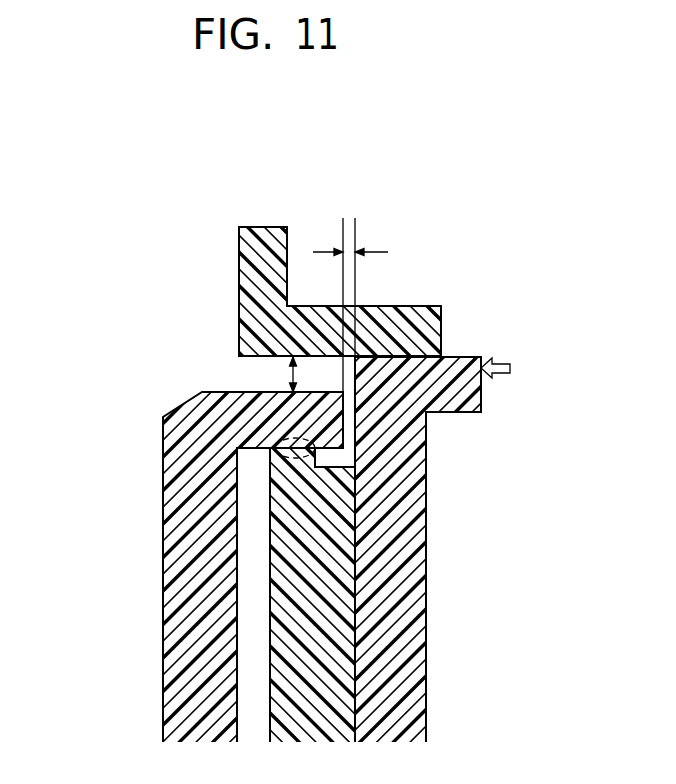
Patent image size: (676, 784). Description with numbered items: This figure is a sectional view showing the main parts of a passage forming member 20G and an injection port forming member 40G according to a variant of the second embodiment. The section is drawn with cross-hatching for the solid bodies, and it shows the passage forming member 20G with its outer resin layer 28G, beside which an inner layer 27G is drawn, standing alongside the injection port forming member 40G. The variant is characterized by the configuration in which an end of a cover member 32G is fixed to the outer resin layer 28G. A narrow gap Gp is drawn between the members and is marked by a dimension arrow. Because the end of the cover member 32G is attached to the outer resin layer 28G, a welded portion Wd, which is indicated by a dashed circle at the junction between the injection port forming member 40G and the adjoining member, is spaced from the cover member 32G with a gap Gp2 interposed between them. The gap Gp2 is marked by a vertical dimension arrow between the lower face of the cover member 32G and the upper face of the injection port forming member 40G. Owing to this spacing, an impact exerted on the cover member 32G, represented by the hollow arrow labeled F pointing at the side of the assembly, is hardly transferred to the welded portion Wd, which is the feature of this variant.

The cover member 32G is at (239, 253).
The injection port forming member 40G is at (163, 467).
The inner layer 27G is at (354, 638).
The outer resin layer 28G is at (426, 575).
The passage forming member 20G is at (338, 392).
The gap Gp is at (350, 293).
The gap Gp2 is at (288, 372).
The welded portion Wd is at (286, 440).
The force F is at (507, 358).